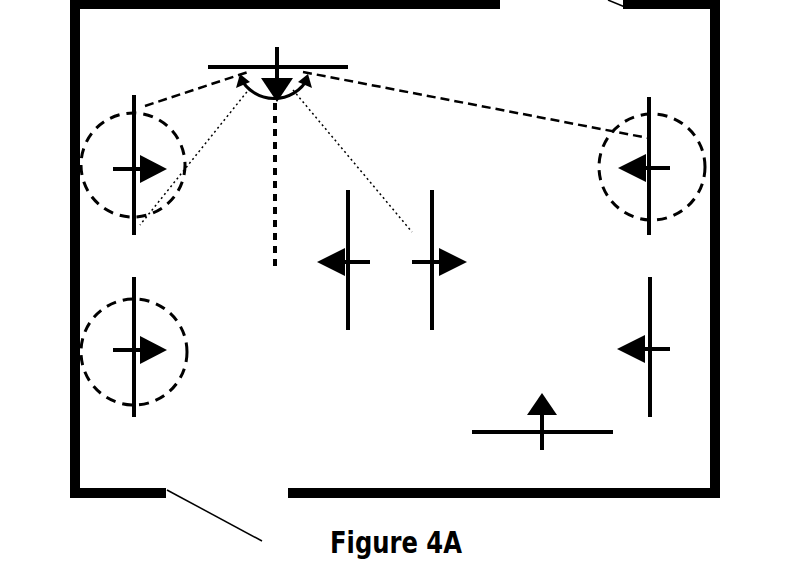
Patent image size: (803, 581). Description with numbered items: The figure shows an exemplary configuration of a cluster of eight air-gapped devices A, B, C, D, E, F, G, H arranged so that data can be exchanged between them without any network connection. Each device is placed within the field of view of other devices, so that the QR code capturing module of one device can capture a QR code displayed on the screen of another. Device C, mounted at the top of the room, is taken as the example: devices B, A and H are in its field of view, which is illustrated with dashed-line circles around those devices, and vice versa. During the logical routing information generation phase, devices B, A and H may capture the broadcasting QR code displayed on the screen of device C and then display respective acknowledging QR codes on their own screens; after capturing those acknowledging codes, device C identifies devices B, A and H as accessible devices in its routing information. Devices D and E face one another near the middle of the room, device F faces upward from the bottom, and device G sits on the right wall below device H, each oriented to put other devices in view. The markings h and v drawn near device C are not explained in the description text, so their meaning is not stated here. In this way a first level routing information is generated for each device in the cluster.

The air-gapped device A is at (134, 347).
The air-gapped device B is at (133, 165).
The air-gapped device C is at (394, 142).
The air-gapped device D is at (343, 244).
The air-gapped device E is at (439, 277).
The air-gapped device F is at (542, 437).
The air-gapped device G is at (658, 347).
The air-gapped device H is at (652, 166).
The horizontal reference axis of speaker C h is at (262, 185).
The vertical rotation angle of speaker C v is at (295, 90).